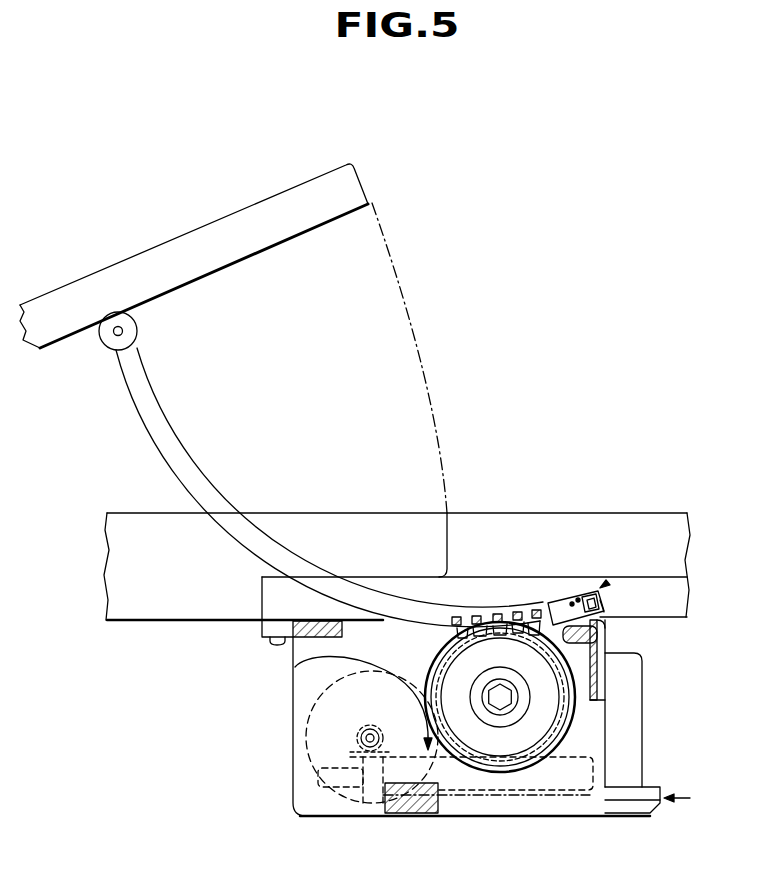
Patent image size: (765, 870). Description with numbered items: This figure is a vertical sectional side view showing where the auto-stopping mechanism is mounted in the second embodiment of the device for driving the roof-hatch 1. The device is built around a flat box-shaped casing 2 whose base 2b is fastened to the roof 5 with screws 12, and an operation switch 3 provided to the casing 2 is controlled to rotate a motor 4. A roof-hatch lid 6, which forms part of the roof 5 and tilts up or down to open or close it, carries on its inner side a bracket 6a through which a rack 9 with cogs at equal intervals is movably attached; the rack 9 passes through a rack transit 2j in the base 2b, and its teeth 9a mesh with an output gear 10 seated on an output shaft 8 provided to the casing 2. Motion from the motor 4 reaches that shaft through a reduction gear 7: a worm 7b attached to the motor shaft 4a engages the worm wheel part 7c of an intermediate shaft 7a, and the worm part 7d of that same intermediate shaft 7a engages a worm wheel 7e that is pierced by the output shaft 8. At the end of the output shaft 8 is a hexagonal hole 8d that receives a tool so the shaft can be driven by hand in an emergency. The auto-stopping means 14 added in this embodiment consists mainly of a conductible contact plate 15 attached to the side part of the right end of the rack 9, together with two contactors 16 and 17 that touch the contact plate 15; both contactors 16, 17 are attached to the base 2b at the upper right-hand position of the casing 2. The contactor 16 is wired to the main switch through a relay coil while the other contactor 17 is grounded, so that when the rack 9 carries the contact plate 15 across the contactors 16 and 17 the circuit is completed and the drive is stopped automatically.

The device for driving the roof-hatch 1 is at (698, 811).
The casing 2 is at (293, 790).
The base 2b is at (606, 635).
The rack transit 2j is at (553, 630).
The operation switch 3 is at (630, 808).
The motor 4 is at (312, 716).
The motor shaft 4a is at (370, 726).
The roof 5 is at (538, 522).
The roof-hatch lid 6 is at (357, 187).
The bracket 6a is at (137, 330).
The reduction gear 7 is at (295, 667).
The intermediate shaft 7a is at (597, 763).
The worm 7b is at (361, 740).
The worm wheel part 7c is at (375, 812).
The worm part 7d is at (563, 797).
The worm wheel 7e is at (563, 727).
The output shaft 8 is at (527, 680).
The hexagonal hole 8d is at (509, 712).
The rack 9 is at (211, 480).
The rack teeth 9a is at (480, 613).
The output gear 10 is at (562, 712).
The screws 12 is at (276, 644).
The auto-stopping means 14 is at (603, 587).
The conductible contact plate 15 is at (600, 600).
The contactor 16 is at (569, 609).
The contactor 17 is at (578, 600).